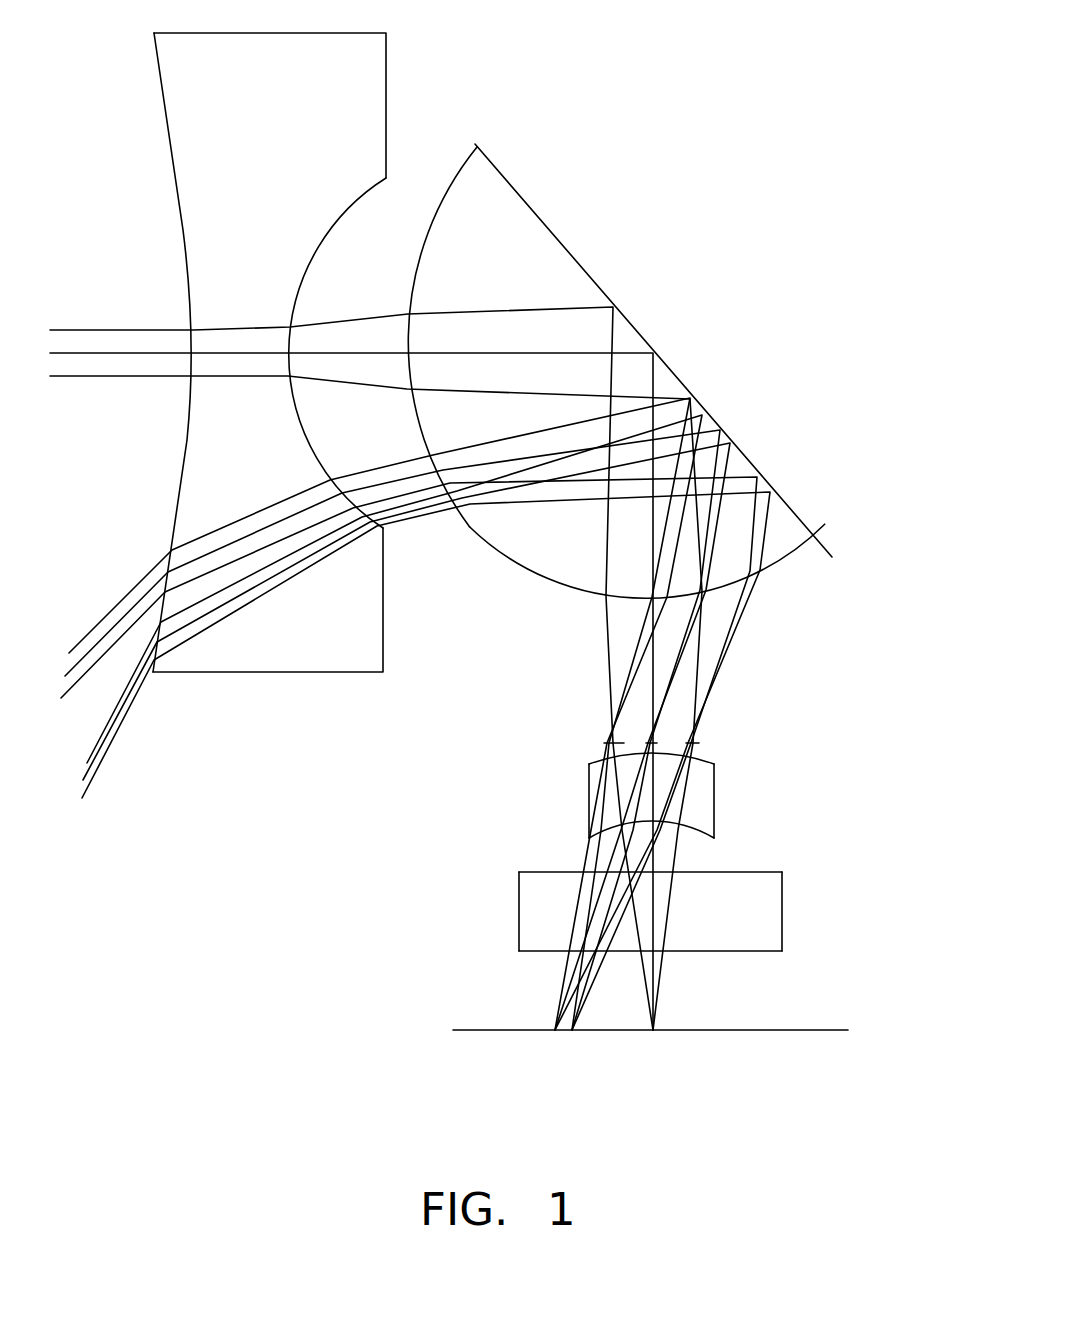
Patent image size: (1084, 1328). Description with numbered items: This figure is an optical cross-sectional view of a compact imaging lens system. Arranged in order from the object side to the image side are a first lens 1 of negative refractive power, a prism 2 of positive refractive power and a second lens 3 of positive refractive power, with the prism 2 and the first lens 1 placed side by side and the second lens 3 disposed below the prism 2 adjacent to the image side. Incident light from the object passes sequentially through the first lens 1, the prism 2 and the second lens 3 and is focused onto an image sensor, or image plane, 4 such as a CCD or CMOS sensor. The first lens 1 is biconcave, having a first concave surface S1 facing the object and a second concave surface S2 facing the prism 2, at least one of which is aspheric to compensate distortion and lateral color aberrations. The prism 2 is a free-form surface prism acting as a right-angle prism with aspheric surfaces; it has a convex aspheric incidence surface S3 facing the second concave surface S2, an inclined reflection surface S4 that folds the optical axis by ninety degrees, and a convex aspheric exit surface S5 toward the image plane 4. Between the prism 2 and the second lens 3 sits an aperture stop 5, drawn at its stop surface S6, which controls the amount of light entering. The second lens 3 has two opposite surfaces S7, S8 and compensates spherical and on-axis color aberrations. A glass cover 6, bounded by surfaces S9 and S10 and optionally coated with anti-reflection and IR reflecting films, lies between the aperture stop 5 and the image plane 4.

The first lens 1 is at (231, 416).
The prism 2 is at (620, 375).
The second lens 3 is at (678, 788).
The image sensor (image plane) 4 is at (860, 1020).
The aperture stop 5 is at (677, 690).
The glass cover 6 is at (674, 911).
The first concave surface S1 is at (184, 445).
The second concave surface S2 is at (307, 270).
The incidence surface S3 is at (449, 185).
The reflection surface S4 is at (538, 217).
The exit surface S5 is at (541, 576).
The aperture stop surface S6 is at (610, 742).
The surface of second lens S7 is at (618, 756).
The surface of second lens S8 is at (672, 826).
The first surface of plate S9 is at (553, 872).
The second surface of plate S10 is at (557, 951).